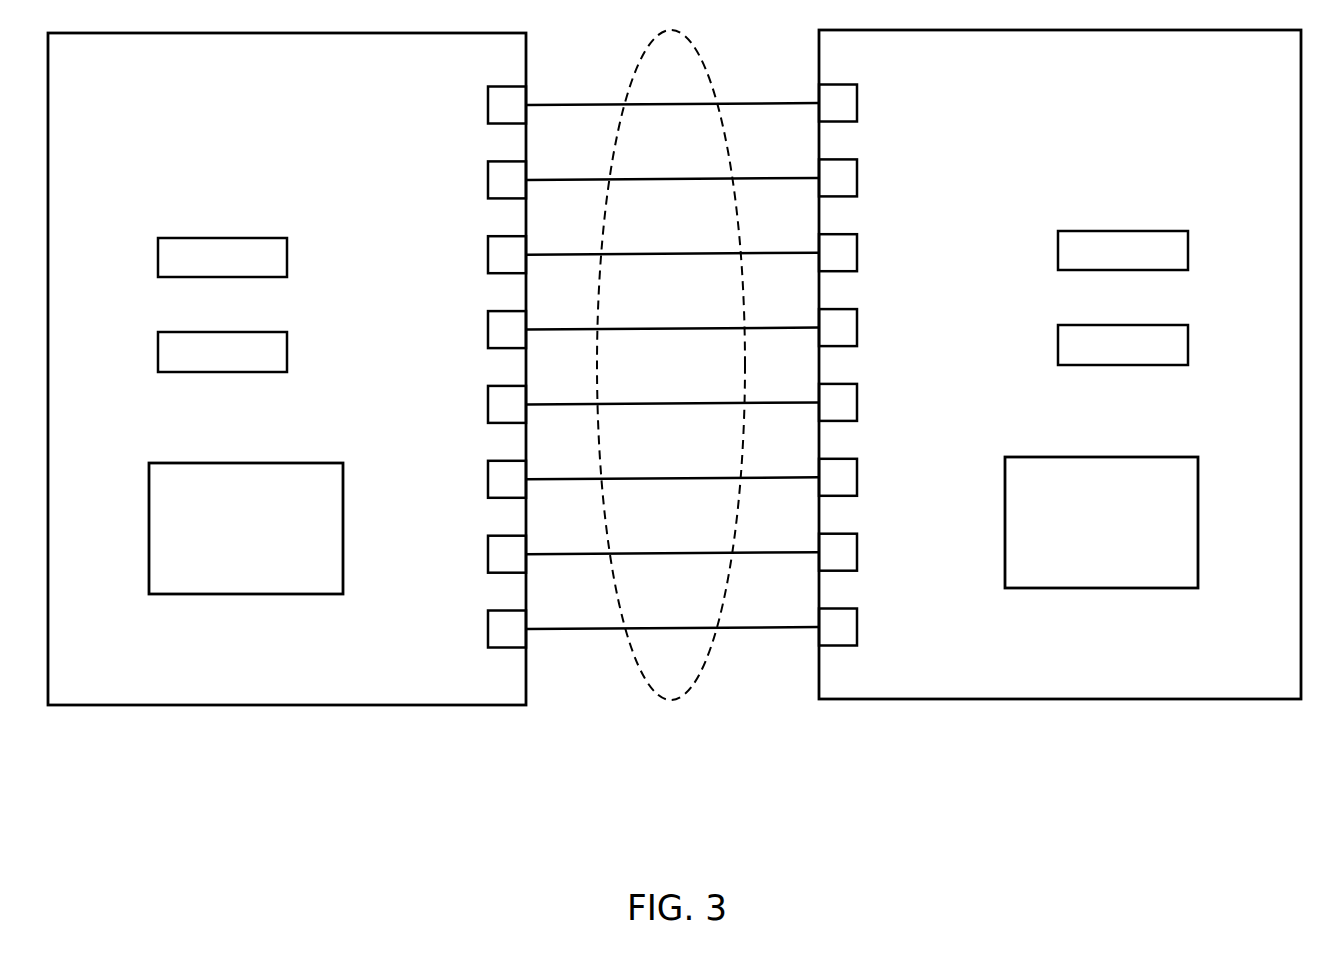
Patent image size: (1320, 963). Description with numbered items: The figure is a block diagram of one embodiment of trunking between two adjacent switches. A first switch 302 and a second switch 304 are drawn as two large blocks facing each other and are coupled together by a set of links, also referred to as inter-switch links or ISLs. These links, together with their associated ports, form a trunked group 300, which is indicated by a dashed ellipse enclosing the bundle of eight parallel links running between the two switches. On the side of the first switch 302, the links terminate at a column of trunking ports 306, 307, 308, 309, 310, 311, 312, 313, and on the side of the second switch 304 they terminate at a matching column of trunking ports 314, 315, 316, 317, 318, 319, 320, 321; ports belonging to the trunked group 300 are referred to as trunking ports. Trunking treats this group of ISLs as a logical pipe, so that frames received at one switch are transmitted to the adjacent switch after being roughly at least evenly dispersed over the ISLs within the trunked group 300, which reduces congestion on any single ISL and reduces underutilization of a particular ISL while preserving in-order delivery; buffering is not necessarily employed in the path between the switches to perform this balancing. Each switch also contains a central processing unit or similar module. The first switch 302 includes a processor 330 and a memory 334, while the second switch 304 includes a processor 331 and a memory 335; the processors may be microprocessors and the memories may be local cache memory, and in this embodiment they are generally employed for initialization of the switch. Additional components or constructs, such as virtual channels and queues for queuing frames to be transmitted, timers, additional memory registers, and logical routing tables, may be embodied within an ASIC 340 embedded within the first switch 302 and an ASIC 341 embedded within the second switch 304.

The trunked group 300 is at (670, 700).
The switch 302 is at (205, 706).
The switch 304 is at (1162, 699).
The trunking port 306 is at (487, 93).
The trunking port 307 is at (487, 168).
The trunking port 308 is at (487, 243).
The trunking port 309 is at (487, 318).
The trunking port 310 is at (487, 392).
The trunking port 311 is at (487, 467).
The trunking port 312 is at (487, 542).
The trunking port 313 is at (487, 617).
The trunking port 314 is at (857, 92).
The trunking port 315 is at (857, 167).
The trunking port 316 is at (857, 242).
The trunking port 317 is at (857, 317).
The trunking port 318 is at (857, 391).
The trunking port 319 is at (857, 466).
The trunking port 320 is at (857, 541).
The trunking port 321 is at (857, 616).
The processor 330 is at (190, 238).
The processor 331 is at (1152, 231).
The memory 334 is at (190, 372).
The memory 335 is at (1162, 365).
The ASIC 340 is at (195, 594).
The ASIC 341 is at (1165, 588).